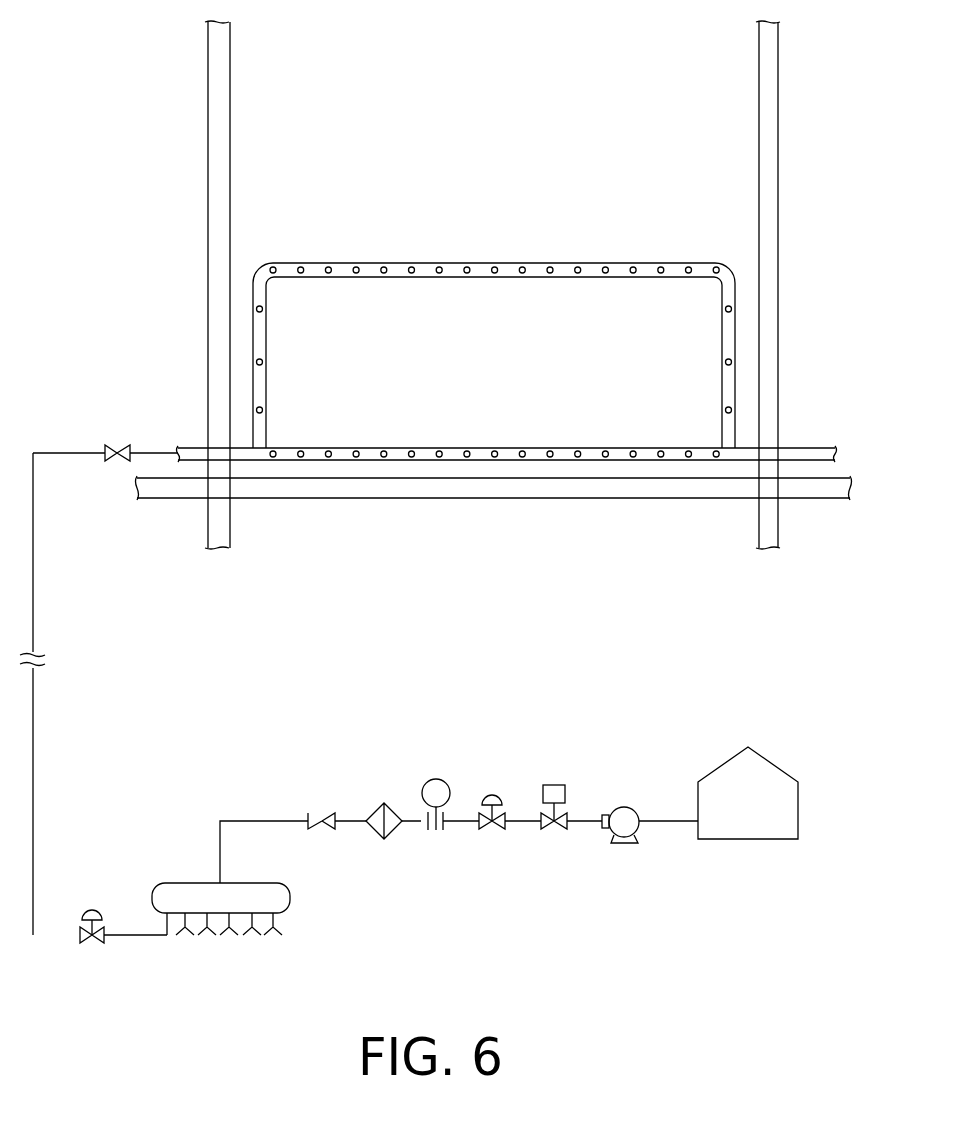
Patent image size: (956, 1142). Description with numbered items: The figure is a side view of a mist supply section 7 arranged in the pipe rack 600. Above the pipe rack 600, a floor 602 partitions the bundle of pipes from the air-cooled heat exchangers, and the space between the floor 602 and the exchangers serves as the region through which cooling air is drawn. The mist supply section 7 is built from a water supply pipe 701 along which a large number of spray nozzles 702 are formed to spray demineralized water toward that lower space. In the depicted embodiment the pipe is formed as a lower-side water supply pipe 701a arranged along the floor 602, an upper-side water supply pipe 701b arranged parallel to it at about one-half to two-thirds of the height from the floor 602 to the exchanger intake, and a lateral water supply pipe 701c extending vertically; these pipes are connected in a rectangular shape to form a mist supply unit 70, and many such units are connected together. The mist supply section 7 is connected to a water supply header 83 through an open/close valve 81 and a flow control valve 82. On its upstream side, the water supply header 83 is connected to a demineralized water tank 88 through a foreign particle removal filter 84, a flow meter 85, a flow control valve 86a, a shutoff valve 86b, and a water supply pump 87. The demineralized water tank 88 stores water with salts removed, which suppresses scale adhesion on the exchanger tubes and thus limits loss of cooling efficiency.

The mist supply section 7 is at (443, 295).
The mist supply unit 70 is at (443, 339).
The pipe rack 600 is at (778, 160).
The floor 602 is at (521, 498).
The water supply pipe 701 is at (443, 339).
The lower-side water supply pipe 701a is at (432, 424).
The upper-side water supply pipe 701b is at (350, 243).
The lateral water supply pipe 701c is at (253, 343).
The spray nozzle 702 is at (495, 266).
The open/close valve 81 is at (123, 447).
The flow control valve 82 is at (91, 910).
The water supply header 83 is at (173, 882).
The foreign particle removal filter 84 is at (378, 805).
The flow meter 85 is at (437, 779).
The flow control valve 86a is at (493, 795).
The shutoff valve 86b is at (553, 785).
The water supply pump 87 is at (626, 806).
The demineralized water tank 88 is at (766, 763).